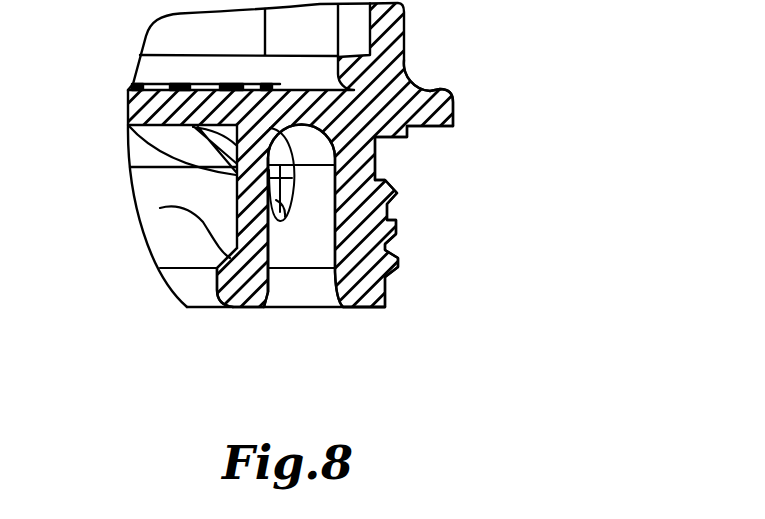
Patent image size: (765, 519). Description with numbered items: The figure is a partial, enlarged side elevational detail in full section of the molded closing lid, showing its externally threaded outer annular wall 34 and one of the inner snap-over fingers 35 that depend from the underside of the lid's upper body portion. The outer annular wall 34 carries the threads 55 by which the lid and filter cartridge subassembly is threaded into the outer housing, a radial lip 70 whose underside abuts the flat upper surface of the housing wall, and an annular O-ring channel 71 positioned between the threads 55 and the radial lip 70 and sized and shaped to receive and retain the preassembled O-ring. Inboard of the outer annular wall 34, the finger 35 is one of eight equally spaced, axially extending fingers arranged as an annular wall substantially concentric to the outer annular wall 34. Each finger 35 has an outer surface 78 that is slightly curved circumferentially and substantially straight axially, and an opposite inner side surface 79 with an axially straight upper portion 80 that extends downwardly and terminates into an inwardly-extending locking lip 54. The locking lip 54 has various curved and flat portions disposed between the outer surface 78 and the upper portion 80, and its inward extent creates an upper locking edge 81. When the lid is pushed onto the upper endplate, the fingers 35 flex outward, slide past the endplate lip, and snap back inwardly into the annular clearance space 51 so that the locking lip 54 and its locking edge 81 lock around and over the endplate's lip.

The outer annular wall 34 is at (381, 285).
The snap-over finger 35 is at (232, 307).
The annular clearance space 51 is at (308, 296).
The locking lip 54 is at (220, 269).
The threads 55 is at (399, 252).
The radial lip 70 is at (444, 92).
The O-ring channel 71 is at (402, 164).
The outer surface 78 is at (275, 305).
The inner side surface 79 is at (186, 285).
The upper portion 80 is at (138, 122).
The upper locking edge 81 is at (160, 208).